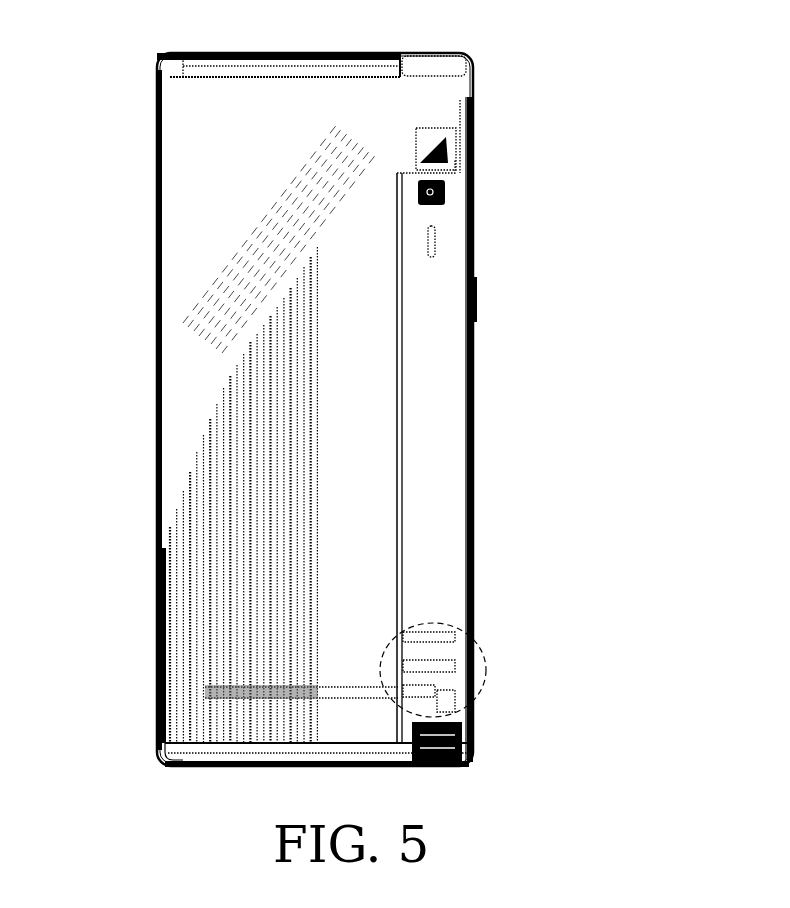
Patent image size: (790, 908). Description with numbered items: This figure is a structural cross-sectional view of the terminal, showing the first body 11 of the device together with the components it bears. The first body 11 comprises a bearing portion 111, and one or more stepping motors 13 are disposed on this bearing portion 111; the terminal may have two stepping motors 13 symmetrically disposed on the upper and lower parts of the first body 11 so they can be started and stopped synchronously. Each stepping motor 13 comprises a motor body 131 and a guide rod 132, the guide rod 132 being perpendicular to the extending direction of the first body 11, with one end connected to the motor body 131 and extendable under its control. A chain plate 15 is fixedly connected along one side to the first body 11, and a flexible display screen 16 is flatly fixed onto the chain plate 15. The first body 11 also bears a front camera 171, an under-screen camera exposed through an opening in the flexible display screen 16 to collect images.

The first body 11 is at (495, 66).
The stepping motor 13 is at (462, 145).
The chain plate 15 is at (178, 612).
The flexible display screen 16 is at (178, 200).
The bearing portion 111 is at (447, 403).
The motor body 131 is at (487, 665).
The guide rod 132 is at (338, 688).
The front camera 171 is at (445, 192).